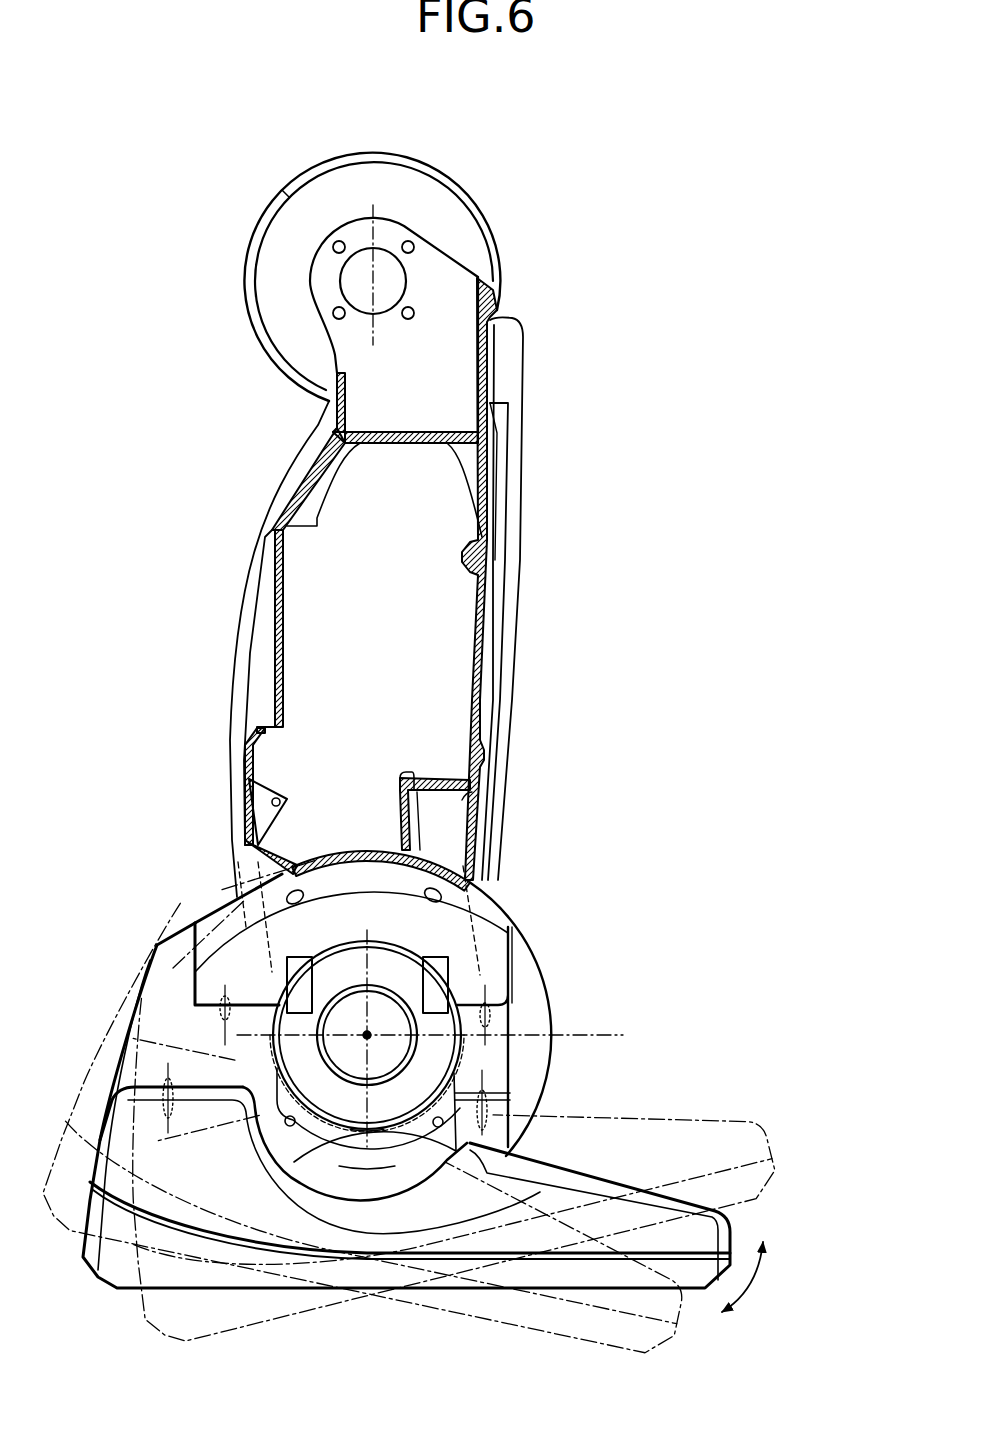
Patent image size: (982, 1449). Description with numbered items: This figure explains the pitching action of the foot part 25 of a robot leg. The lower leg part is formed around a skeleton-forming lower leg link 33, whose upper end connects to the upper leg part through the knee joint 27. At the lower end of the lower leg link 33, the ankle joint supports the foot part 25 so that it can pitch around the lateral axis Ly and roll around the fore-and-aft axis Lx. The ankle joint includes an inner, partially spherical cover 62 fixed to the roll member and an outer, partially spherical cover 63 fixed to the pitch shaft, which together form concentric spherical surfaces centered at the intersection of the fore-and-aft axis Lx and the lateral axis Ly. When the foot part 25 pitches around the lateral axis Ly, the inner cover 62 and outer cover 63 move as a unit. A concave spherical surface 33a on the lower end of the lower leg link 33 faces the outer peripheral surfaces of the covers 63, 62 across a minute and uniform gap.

The foot part 25 is at (633, 1160).
The knee joint 27 is at (474, 186).
The lower leg link 33 is at (488, 641).
The concave spherical surface 33a is at (332, 863).
The inner, partially spherical cover 62 is at (532, 983).
The outer, partially spherical cover 63 is at (366, 865).
The fore-and-aft axis Lx is at (602, 1035).
The lateral axis Ly is at (369, 1032).